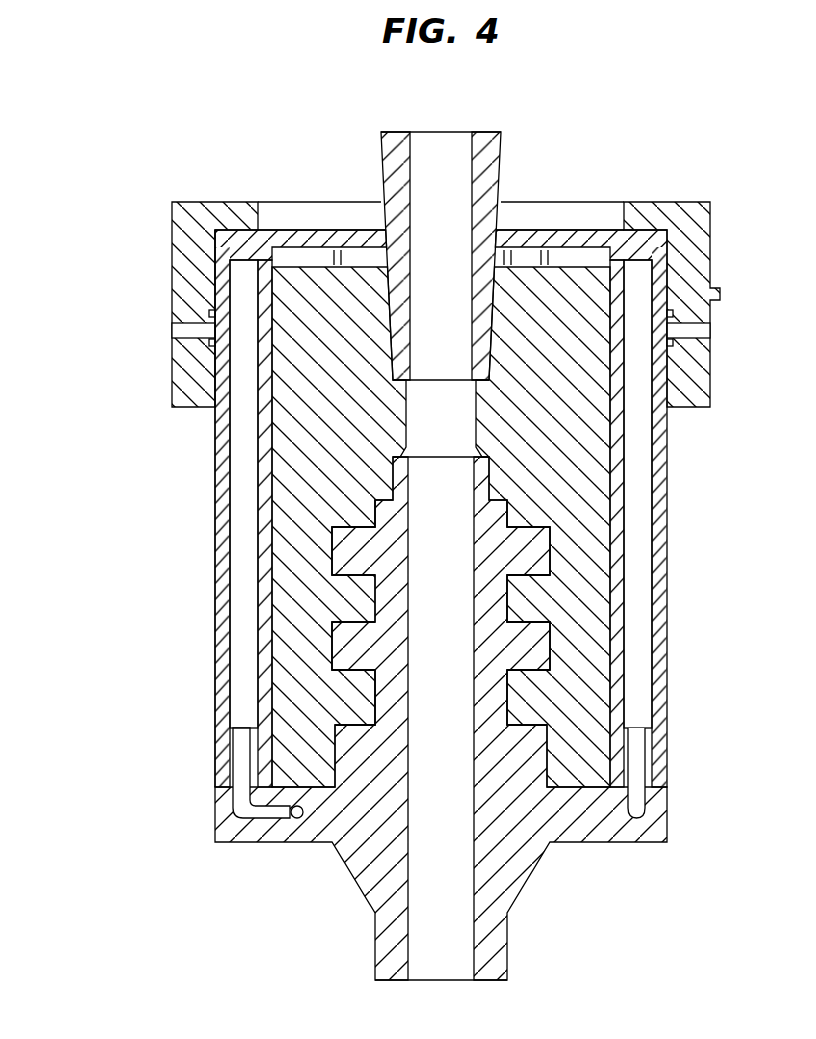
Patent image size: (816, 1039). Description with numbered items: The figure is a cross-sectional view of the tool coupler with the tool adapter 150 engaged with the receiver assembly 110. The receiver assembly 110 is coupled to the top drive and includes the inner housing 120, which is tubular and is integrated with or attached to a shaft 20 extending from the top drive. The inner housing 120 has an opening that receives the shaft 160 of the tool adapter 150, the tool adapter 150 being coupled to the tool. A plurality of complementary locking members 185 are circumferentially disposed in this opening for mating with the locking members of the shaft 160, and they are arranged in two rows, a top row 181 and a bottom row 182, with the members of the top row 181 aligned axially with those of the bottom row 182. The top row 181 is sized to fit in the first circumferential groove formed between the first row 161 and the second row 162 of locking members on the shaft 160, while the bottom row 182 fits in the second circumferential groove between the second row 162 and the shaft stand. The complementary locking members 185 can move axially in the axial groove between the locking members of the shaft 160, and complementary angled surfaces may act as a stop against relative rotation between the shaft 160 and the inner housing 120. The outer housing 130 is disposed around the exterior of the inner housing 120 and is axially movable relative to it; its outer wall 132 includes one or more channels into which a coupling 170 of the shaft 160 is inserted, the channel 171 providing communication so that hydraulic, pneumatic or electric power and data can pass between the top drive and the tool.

The shaft 20 is at (382, 167).
The receiver assembly 110 is at (130, 220).
The inner housing 120 is at (560, 488).
The outer housing 130 is at (668, 602).
The outer wall 132 is at (215, 533).
The tool adapter 150 is at (583, 843).
The shaft 160 is at (373, 513).
The first row of locking members 161 is at (550, 558).
The second row of locking members 162 is at (550, 640).
The coupling 170 is at (233, 750).
The channel 171 is at (245, 578).
The top row of complementary locking members 181 is at (507, 597).
The bottom row of complementary locking members 182 is at (507, 702).
The complementary locking members 185 is at (373, 695).